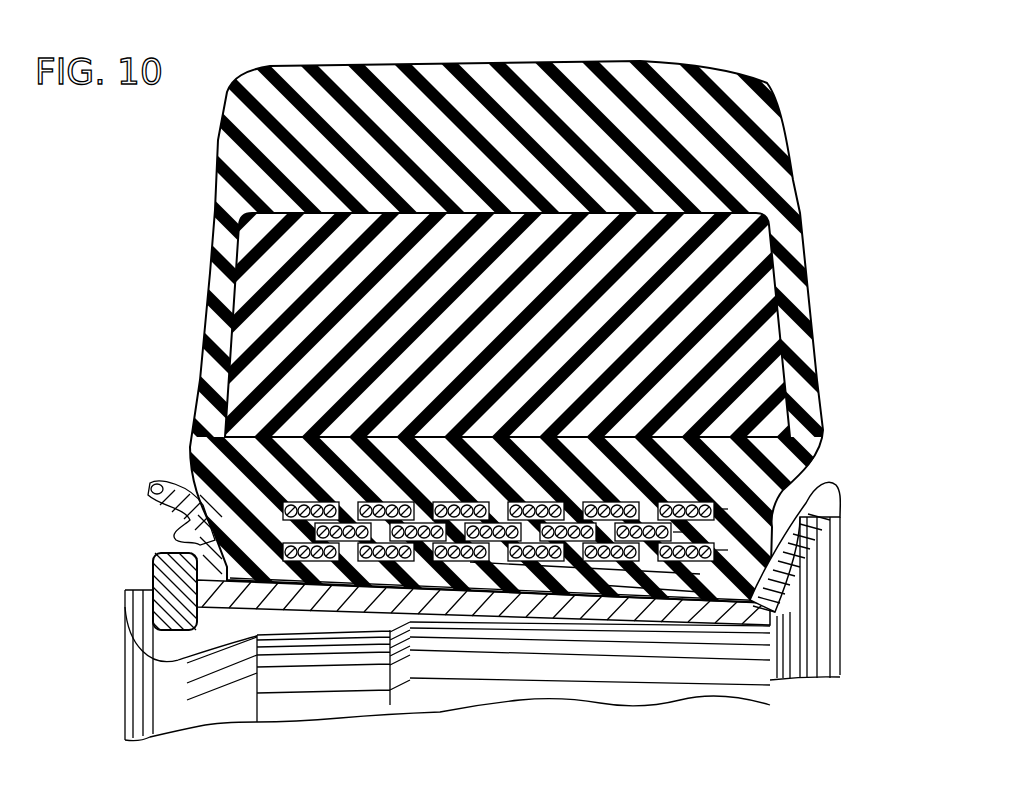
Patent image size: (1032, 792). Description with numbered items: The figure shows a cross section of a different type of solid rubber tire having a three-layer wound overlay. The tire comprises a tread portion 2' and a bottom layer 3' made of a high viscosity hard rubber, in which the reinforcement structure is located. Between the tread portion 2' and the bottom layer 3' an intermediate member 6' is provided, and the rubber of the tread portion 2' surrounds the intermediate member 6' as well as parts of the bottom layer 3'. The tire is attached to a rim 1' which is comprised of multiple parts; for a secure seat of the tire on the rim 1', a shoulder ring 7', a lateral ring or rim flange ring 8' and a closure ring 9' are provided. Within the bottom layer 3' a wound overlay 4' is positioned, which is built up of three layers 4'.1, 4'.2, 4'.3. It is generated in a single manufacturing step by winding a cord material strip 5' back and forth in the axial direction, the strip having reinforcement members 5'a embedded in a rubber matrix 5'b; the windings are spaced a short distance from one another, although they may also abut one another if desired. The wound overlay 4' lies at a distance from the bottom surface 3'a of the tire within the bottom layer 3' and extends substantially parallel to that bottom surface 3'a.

The rim 1' is at (514, 627).
The tread portion 2' is at (516, 350).
The bottom layer 3' is at (516, 350).
The bottom surface 3'a is at (650, 670).
The wound overlay 4' is at (606, 627).
The first layer of wound overlay 4'.1 is at (606, 576).
The second layer of wound overlay 4'.2 is at (622, 547).
The third layer of wound overlay 4'.3 is at (606, 519).
The cord material strip 5' is at (500, 675).
The reinforcement members 5'a is at (181, 534).
The rubber matrix 5'b is at (585, 658).
The intermediate member 6' is at (516, 350).
The shoulder ring 7' is at (447, 681).
The rim flange ring 8' is at (149, 484).
The closure ring 9' is at (135, 588).